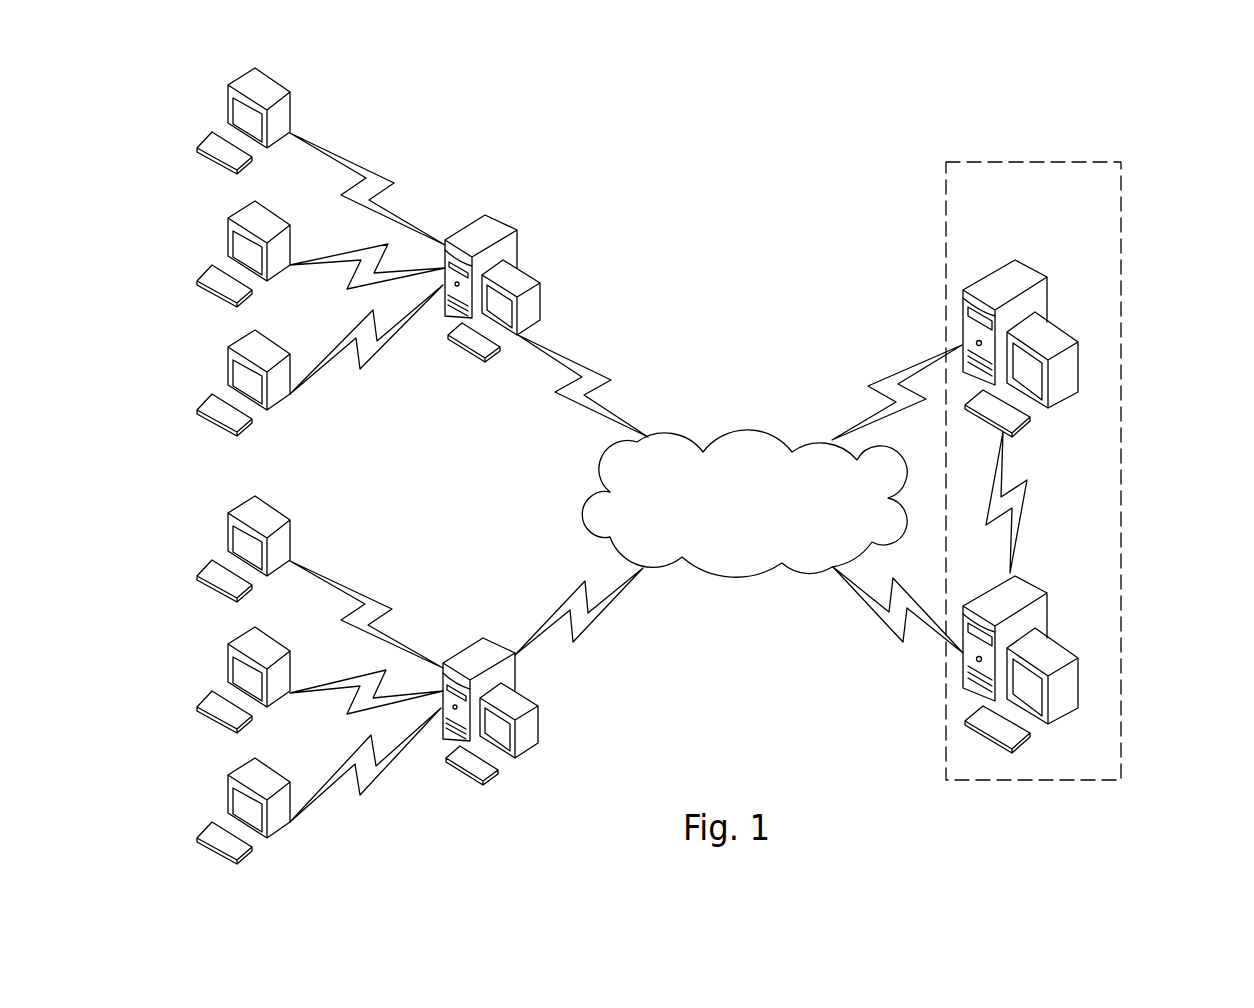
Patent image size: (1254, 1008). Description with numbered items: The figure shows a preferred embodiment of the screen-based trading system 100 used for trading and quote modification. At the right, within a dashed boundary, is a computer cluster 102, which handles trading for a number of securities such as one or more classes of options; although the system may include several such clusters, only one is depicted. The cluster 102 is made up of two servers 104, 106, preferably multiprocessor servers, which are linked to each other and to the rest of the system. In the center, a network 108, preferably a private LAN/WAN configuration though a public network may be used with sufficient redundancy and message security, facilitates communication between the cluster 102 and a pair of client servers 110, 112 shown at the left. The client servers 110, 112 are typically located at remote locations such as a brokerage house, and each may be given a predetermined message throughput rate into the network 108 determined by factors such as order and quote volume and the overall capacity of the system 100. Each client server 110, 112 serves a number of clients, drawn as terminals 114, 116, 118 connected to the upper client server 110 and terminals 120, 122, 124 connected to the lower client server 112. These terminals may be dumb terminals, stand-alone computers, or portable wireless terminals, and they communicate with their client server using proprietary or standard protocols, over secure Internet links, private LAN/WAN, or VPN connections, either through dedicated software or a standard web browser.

The system 100 is at (972, 107).
The cluster 102 is at (1121, 533).
The server 104 is at (1078, 358).
The server 106 is at (1078, 672).
The network 108 is at (743, 577).
The client server 110 is at (541, 299).
The client server 112 is at (539, 721).
The terminal 114 is at (228, 103).
The terminal 116 is at (230, 266).
The terminal 118 is at (230, 395).
The terminal 120 is at (230, 561).
The terminal 122 is at (230, 692).
The terminal 124 is at (230, 823).